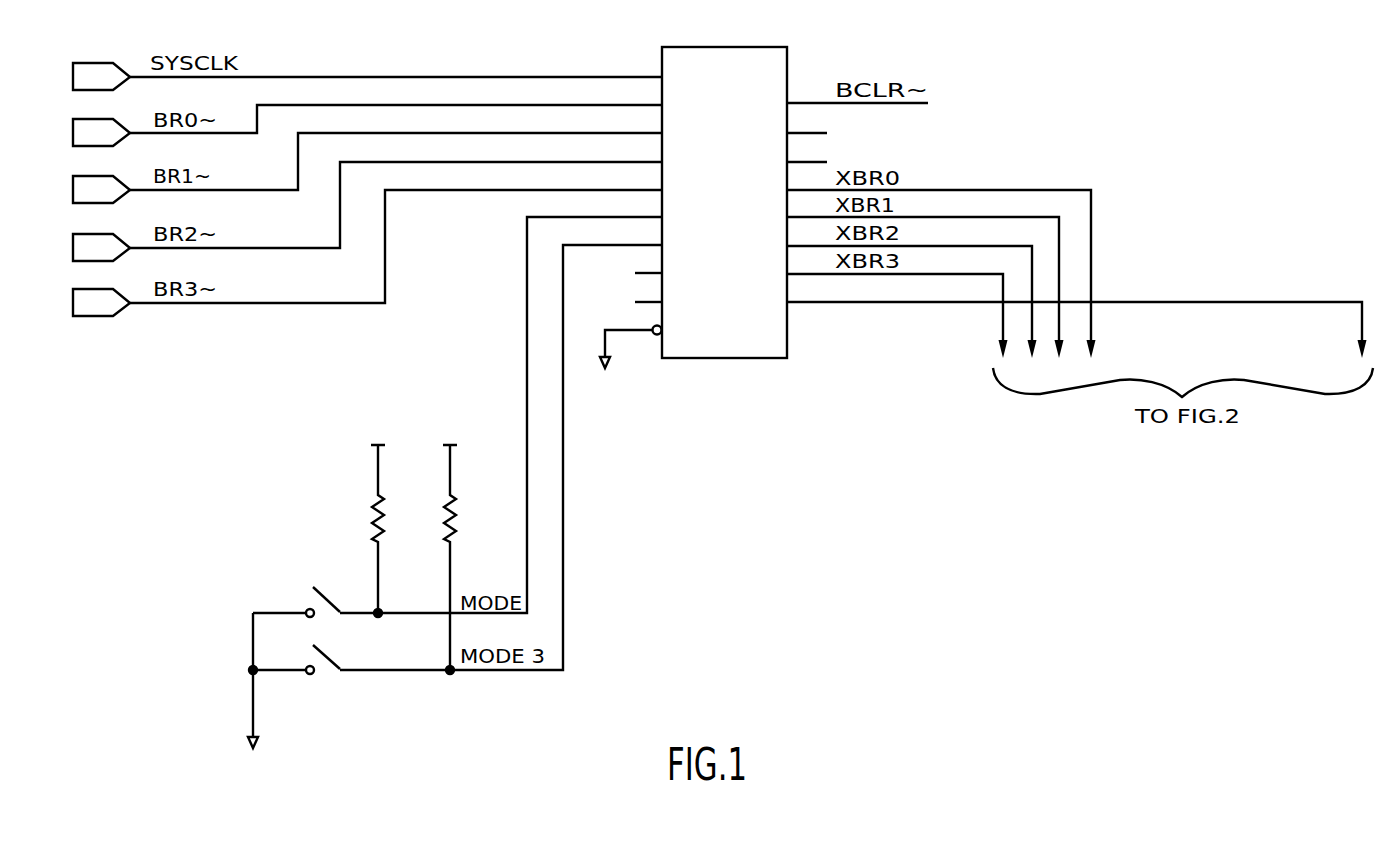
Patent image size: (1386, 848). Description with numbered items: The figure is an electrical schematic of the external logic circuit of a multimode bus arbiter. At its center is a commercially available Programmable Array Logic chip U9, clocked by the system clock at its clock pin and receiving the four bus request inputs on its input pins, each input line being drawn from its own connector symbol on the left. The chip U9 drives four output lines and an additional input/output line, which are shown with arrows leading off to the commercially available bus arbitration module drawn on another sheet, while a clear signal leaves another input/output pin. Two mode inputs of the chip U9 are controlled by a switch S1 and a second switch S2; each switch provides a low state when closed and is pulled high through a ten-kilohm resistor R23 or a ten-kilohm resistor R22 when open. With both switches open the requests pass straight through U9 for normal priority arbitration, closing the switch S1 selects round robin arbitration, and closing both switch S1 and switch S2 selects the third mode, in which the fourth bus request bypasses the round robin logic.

The PAL16R6B chip U9 is at (728, 207).
The 10K resistor R22 is at (474, 557).
The 10K resistor R23 is at (403, 529).
The switch S1 is at (306, 615).
The second switch S2 is at (309, 672).